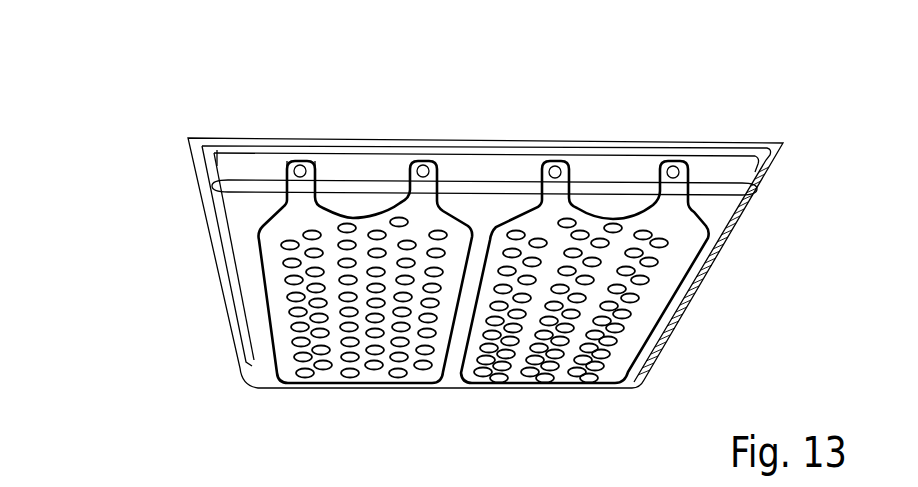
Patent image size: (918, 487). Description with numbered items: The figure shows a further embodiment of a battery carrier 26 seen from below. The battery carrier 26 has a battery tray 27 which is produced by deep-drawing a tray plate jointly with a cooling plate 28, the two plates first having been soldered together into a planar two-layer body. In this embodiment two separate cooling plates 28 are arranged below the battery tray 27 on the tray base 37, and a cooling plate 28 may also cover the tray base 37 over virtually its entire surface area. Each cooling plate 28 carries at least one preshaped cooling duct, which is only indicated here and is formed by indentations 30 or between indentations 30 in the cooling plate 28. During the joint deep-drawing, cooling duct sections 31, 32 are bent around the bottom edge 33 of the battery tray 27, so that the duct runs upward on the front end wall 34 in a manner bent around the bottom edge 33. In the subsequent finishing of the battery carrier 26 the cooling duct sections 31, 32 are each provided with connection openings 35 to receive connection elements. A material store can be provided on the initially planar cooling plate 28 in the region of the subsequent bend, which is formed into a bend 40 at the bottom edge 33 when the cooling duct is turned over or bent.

The battery carrier 26 is at (668, 99).
The battery tray 27 is at (723, 255).
The cooling plate 28 is at (265, 325).
The indentations 30 is at (322, 374).
The cooling duct section 31 is at (318, 176).
The cooling duct section 32 is at (440, 176).
The bottom edge 33 is at (605, 187).
The front end wall 34 is at (510, 168).
The connection openings 35 is at (682, 168).
The tray base 37 is at (248, 273).
The bend 40 is at (293, 190).